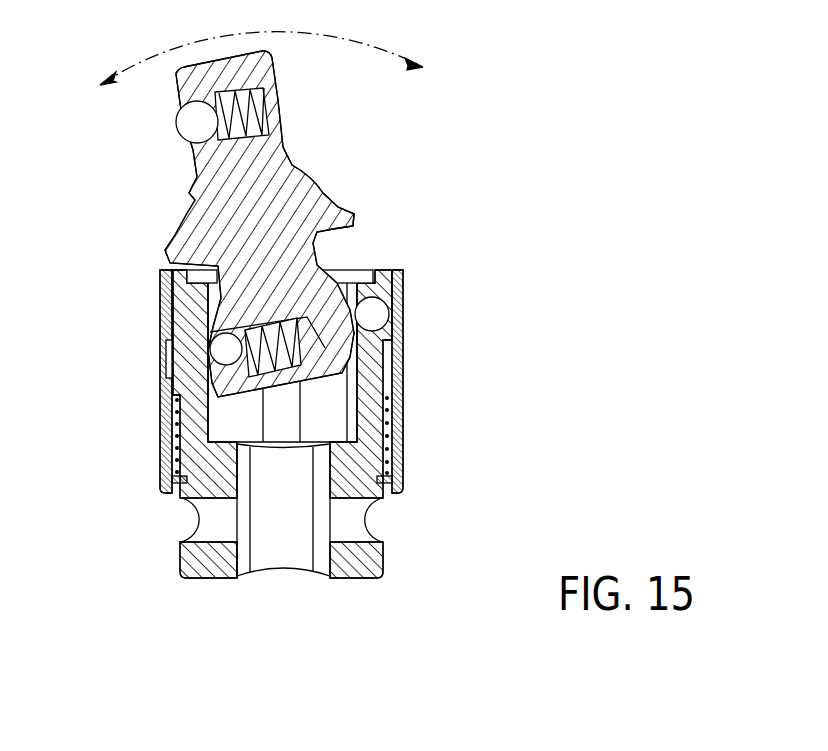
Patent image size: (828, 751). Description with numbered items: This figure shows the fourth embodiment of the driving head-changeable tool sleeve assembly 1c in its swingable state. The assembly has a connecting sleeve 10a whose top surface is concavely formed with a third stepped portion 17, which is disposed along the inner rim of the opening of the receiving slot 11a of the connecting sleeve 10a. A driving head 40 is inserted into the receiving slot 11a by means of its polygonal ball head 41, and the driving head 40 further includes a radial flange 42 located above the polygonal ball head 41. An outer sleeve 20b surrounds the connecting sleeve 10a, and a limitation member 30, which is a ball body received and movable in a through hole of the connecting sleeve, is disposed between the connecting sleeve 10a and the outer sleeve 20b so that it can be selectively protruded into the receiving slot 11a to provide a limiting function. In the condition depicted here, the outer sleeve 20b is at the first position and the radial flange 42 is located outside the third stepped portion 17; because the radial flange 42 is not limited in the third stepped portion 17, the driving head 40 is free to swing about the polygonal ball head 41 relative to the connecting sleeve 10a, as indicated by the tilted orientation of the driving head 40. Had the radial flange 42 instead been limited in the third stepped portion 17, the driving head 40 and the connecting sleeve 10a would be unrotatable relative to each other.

The driving head-changeable tool sleeve assembly 1c is at (400, 532).
The connecting sleeve 10a is at (381, 499).
The receiving slot 11a is at (212, 302).
The third stepped portion 17 is at (374, 283).
The outer sleeve 20b is at (394, 455).
The limitation member 30 is at (378, 313).
The driving head 40 is at (183, 87).
The polygonal ball head 41 is at (353, 385).
The radial flange 42 is at (343, 211).